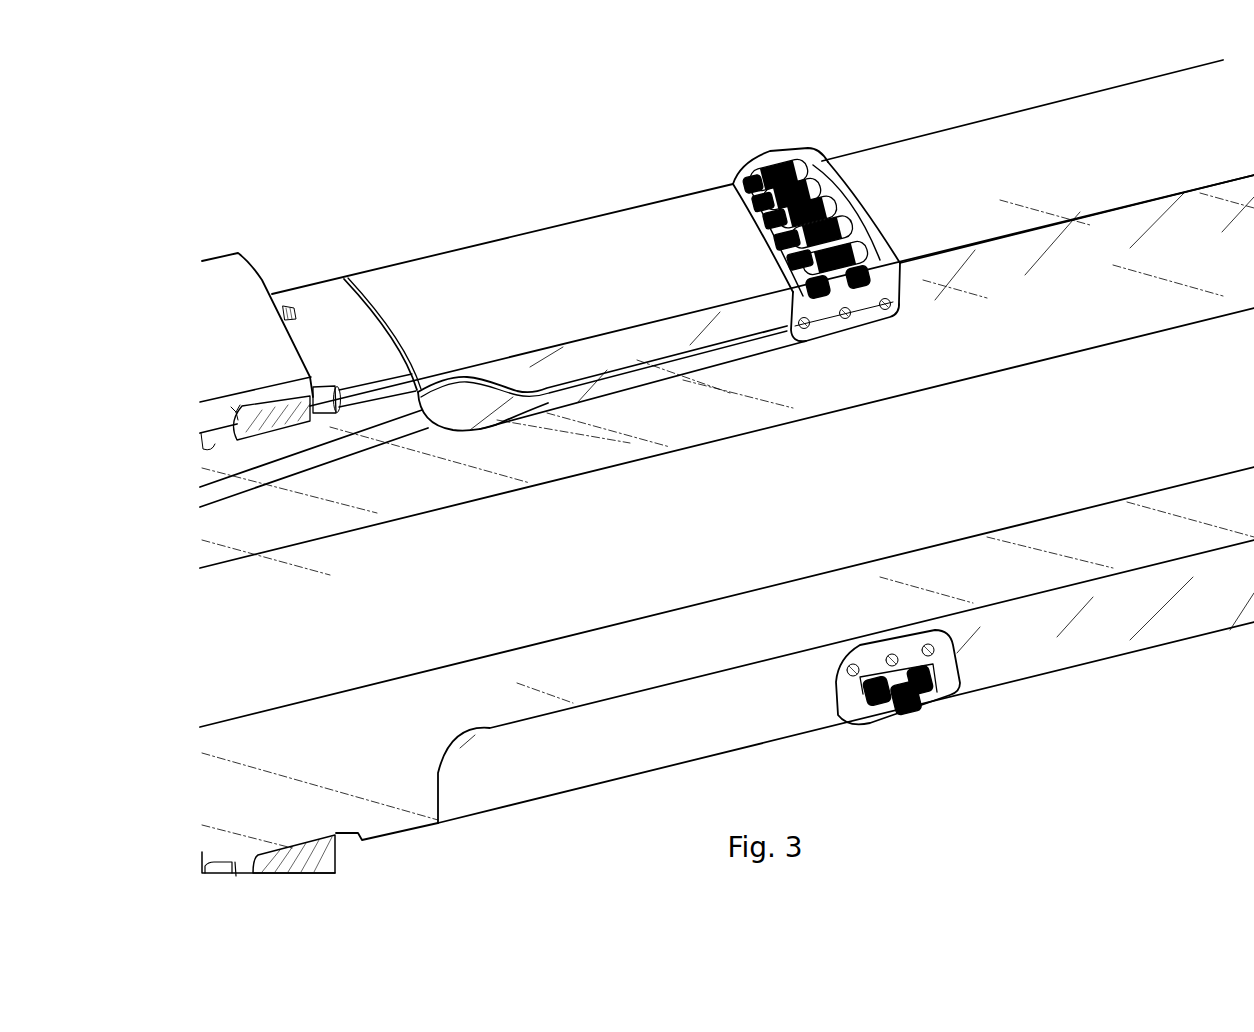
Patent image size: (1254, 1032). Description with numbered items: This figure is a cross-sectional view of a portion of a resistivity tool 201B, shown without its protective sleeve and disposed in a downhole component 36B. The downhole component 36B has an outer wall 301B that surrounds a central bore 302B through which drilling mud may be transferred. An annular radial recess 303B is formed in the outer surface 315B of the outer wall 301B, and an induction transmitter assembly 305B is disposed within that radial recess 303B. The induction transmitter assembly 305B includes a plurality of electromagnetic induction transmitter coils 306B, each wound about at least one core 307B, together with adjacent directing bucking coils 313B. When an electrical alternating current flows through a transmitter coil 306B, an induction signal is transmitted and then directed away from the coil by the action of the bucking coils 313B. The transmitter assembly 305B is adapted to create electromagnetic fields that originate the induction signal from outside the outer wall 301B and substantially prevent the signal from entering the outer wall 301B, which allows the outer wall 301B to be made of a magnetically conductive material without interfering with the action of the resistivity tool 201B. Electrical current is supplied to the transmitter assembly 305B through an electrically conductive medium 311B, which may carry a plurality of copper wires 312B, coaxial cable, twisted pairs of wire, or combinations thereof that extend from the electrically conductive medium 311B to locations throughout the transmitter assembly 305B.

The resistivity tool 201B is at (425, 203).
The outer wall 301B is at (380, 505).
The central bore 302B is at (589, 577).
The radial recess 303B is at (740, 258).
The induction transmitter assembly 305B is at (778, 158).
The electromagnetic induction transmitter coils 306B is at (738, 164).
The core 307B is at (899, 290).
The electrically conductive medium 311B is at (282, 397).
The copper wires 312B is at (770, 338).
The bucking coils 313B is at (930, 692).
The outer surface 315B is at (1030, 130).
The downhole component 36B is at (1150, 707).